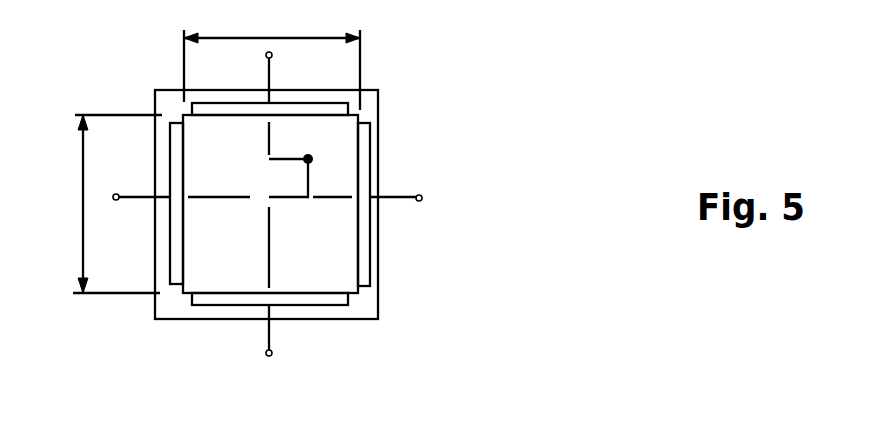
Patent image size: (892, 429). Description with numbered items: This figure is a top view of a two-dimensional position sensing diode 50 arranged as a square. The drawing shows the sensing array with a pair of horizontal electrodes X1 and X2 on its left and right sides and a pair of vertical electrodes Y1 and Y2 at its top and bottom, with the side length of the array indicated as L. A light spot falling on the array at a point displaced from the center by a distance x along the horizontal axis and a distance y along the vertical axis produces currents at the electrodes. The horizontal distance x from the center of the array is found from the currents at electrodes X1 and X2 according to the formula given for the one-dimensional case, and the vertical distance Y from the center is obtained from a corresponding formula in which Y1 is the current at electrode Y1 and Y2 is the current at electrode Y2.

The position sensing device (resistive sensing pad) 50 is at (242, 195).
The electrode X1 is at (133, 181).
The electrode X2 is at (402, 181).
The electrode Y1 is at (285, 341).
The electrode Y2 is at (285, 74).